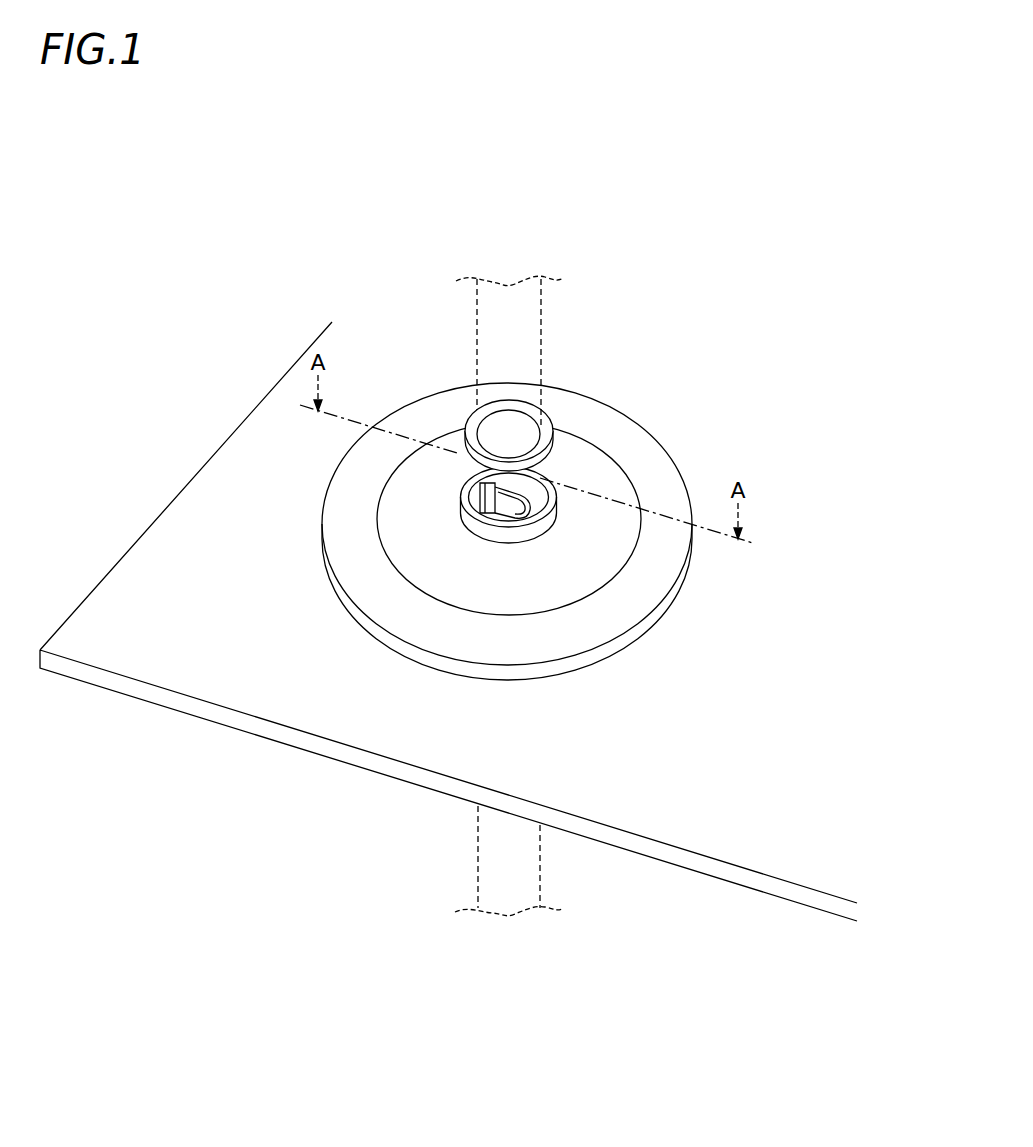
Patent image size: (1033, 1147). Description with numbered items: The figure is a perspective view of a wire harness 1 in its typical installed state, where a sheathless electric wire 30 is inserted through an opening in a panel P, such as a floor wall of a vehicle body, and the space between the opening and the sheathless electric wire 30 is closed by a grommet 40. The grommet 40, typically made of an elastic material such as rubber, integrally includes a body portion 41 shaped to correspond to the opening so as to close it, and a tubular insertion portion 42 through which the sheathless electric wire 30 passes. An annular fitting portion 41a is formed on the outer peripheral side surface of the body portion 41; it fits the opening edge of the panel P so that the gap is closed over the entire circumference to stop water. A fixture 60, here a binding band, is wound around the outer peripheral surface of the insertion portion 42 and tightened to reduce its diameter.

The wire harness 1 is at (412, 302).
The sheathless electric wire 30 is at (542, 297).
The grommet 40 is at (773, 325).
The body portion 41 is at (551, 531).
The fitting portion 41a is at (662, 600).
The insertion portion 42 is at (557, 438).
The fixture 60 is at (510, 507).
The panel P is at (205, 512).